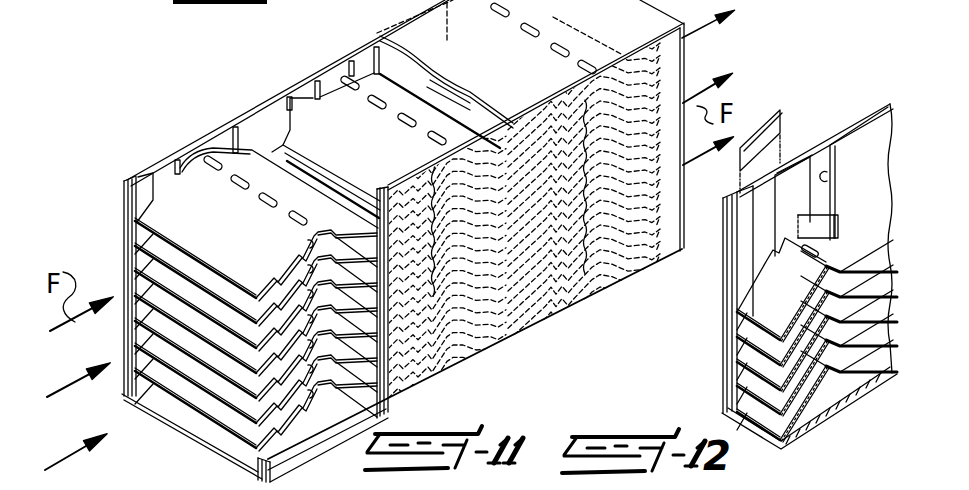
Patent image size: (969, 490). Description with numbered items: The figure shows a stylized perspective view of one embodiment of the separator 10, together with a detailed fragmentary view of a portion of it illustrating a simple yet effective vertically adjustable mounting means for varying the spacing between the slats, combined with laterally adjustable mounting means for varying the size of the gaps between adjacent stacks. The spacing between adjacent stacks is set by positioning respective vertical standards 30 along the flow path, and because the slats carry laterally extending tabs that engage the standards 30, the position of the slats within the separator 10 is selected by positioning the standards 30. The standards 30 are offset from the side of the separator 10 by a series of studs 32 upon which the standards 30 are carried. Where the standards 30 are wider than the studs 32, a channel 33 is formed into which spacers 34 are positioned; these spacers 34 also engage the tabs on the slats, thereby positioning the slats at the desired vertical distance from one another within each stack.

In FIG. 11, the separator 10 is at (200, 104).
In FIG. 12, the vertical standards 30 is at (742, 253).
In FIG. 12, the studs 32 is at (786, 190).
In FIG. 12, the channel 33 is at (828, 178).
In FIG. 12, the spacers 34 is at (770, 124).